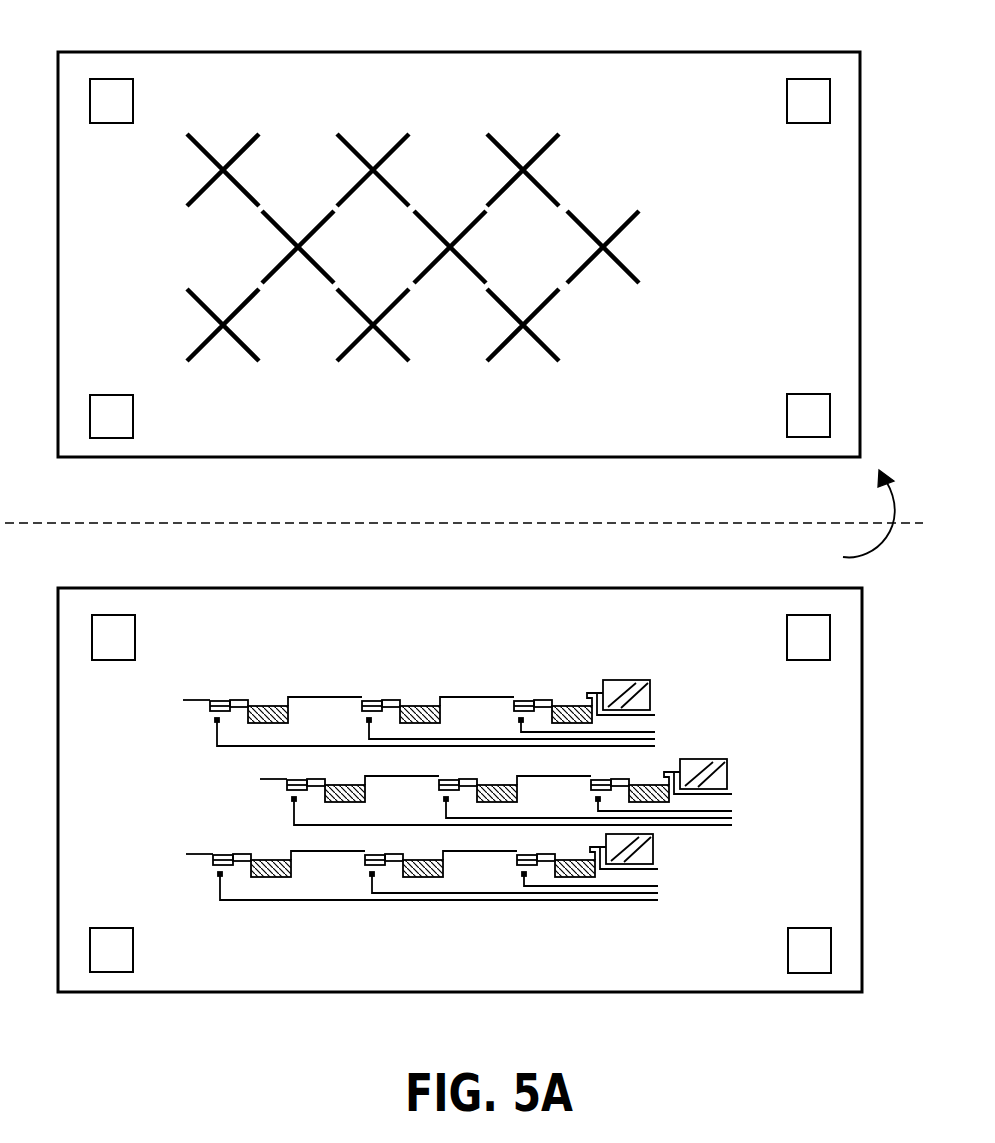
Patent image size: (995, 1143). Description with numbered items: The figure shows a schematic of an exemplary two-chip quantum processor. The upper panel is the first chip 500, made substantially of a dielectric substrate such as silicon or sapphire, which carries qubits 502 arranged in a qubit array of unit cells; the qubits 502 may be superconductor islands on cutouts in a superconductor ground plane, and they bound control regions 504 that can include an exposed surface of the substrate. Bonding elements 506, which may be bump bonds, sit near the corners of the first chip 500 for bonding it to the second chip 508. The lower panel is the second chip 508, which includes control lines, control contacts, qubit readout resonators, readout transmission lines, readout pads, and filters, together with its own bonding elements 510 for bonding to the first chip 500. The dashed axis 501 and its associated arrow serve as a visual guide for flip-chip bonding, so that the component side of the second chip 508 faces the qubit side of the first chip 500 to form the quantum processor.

The first chip 500 is at (660, 52).
The axis 501 is at (817, 523).
The qubits 502 is at (557, 142).
The control regions 504 is at (450, 240).
The bonding elements 506 is at (110, 123).
The second chip 508 is at (485, 588).
The bonding elements 510 is at (135, 637).